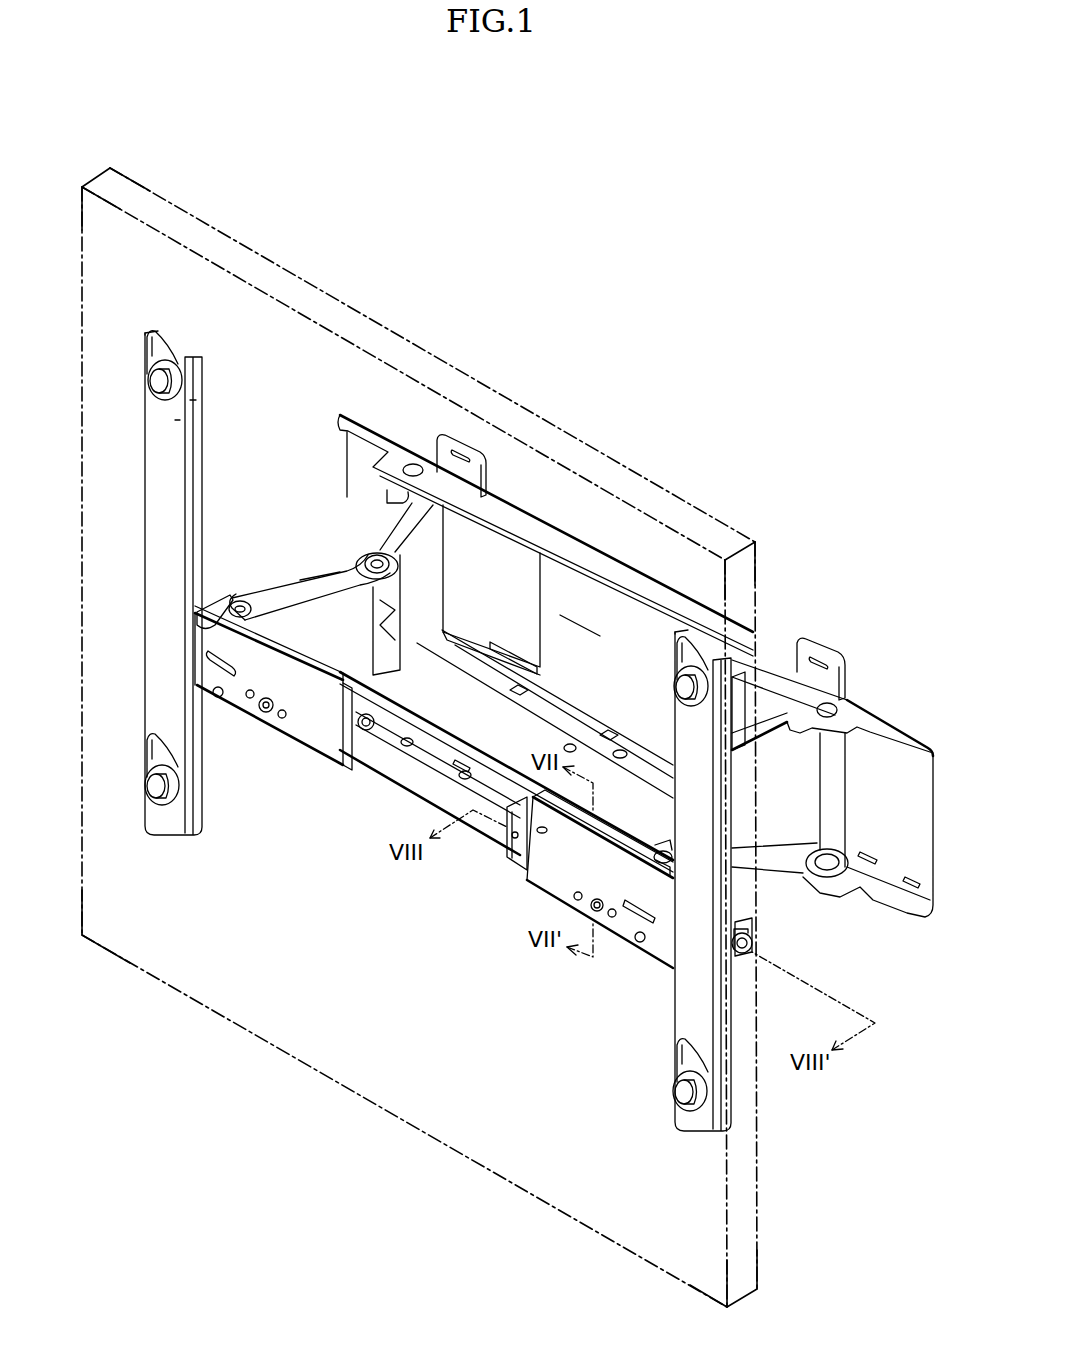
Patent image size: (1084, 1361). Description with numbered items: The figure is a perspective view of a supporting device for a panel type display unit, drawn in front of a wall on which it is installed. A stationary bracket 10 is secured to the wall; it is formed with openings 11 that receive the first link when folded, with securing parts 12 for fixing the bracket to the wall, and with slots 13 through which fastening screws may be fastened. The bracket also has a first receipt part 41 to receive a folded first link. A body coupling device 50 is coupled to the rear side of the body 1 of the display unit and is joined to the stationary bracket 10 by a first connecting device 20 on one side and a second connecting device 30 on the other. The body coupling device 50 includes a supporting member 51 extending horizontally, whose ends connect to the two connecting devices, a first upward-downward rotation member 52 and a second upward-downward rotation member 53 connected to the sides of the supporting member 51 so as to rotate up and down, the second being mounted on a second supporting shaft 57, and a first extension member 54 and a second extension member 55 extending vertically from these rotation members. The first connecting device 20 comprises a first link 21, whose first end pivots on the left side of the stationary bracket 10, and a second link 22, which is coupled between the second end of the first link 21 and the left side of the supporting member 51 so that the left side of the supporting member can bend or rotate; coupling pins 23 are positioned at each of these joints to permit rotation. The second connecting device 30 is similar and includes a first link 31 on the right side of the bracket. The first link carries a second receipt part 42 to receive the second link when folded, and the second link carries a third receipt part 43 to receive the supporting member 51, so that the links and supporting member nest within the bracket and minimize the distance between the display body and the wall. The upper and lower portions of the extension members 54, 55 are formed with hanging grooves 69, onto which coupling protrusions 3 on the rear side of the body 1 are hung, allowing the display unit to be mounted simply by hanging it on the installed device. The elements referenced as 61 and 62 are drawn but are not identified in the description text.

The body 1 is at (284, 268).
The coupling protrusion 3 is at (150, 384).
The stationary bracket 10 is at (636, 596).
The opening 11 is at (536, 600).
The securing part 12 is at (488, 470).
The slot 13 is at (548, 712).
The first connecting device 20 is at (366, 536).
The first link 21 is at (404, 532).
The second link 22 is at (258, 597).
The coupling pin 23 is at (413, 463).
The second connecting device 30 is at (831, 662).
The first link 31 is at (772, 718).
The first receipt part 41 is at (585, 626).
The second receipt part 42 is at (786, 815).
The third receipt part 43 is at (304, 604).
The body coupling device 50 is at (142, 614).
The supporting member 51 is at (441, 736).
The first upward-downward rotation member 52 is at (300, 735).
The second upward-downward rotation member 53 is at (550, 872).
The first extension member 54 is at (157, 462).
The second extension member 55 is at (697, 985).
The second supporting shaft 57 is at (752, 945).
The left stopper 61 is at (350, 762).
The right stopper 62 is at (512, 840).
The hanging groove 69 is at (172, 342).